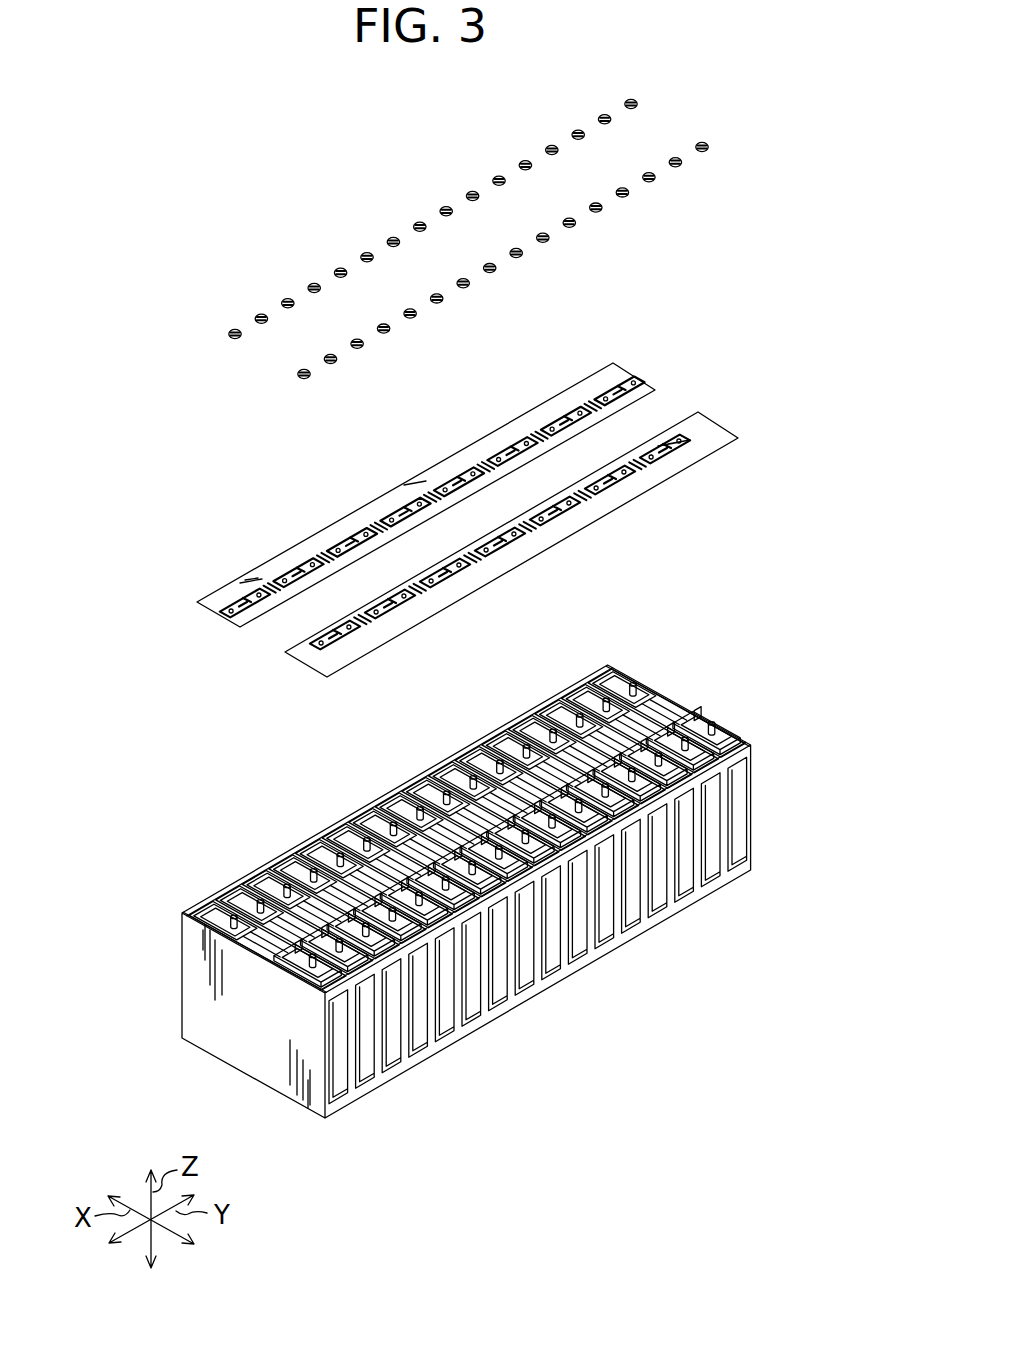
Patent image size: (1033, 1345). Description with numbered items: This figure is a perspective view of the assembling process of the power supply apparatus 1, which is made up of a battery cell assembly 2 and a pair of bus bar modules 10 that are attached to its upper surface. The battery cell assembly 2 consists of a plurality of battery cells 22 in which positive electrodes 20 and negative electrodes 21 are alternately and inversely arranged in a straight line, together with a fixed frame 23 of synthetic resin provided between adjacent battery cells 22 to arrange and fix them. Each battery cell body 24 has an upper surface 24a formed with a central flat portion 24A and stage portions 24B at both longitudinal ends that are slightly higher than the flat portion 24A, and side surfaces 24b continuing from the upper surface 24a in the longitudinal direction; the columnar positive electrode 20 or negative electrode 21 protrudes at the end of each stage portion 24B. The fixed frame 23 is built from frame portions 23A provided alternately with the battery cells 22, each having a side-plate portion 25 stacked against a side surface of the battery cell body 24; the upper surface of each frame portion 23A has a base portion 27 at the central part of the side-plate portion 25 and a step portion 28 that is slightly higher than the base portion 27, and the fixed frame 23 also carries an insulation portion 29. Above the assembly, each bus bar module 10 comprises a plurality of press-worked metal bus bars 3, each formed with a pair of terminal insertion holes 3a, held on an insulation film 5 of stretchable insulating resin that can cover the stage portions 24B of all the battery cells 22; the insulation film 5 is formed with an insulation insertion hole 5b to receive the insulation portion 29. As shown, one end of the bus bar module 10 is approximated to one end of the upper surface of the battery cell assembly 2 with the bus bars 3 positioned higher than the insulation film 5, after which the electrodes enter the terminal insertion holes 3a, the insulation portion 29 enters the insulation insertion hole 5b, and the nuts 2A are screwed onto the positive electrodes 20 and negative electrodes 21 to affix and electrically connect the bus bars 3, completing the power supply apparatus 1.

The power supply apparatus 1 is at (827, 105).
The battery cell assembly 2 is at (790, 712).
The nuts 2A is at (578, 129).
The bus bar 3 is at (600, 395).
The terminal insertion holes 3a is at (632, 383).
The insulation film 5 is at (624, 372).
The insulation insertion hole 5b is at (592, 403).
The bus bar module 10 is at (791, 299).
The positive electrode 20 is at (716, 725).
The negative electrode 21 is at (640, 690).
The battery cell 22 is at (678, 592).
The fixed frame 23 is at (579, 952).
The frame portion 23A is at (727, 882).
The battery cell body 24 is at (702, 724).
The flat portion 24A is at (684, 737).
The stage portion 24B is at (632, 683).
The upper surface 24a is at (762, 1120).
The side surface 24b is at (737, 845).
The side-plate portion 25 is at (352, 1058).
The base portion 27 is at (225, 942).
The step portion 28 is at (212, 892).
The insulation portion 29 is at (730, 770).